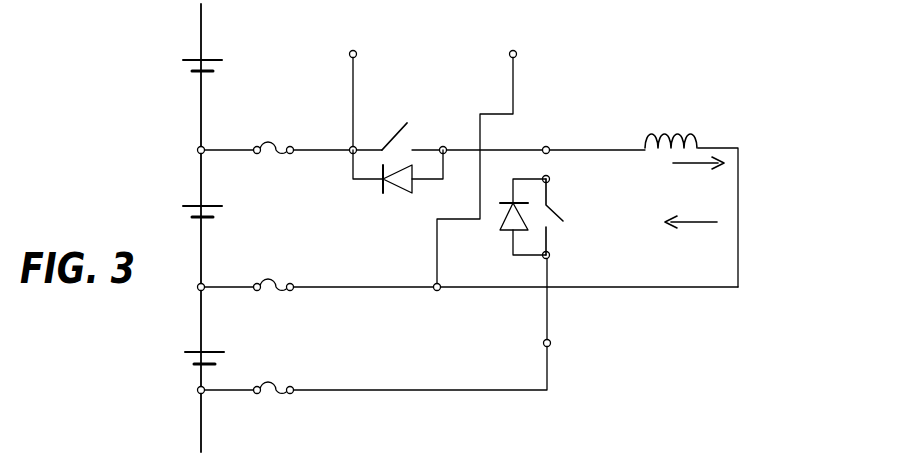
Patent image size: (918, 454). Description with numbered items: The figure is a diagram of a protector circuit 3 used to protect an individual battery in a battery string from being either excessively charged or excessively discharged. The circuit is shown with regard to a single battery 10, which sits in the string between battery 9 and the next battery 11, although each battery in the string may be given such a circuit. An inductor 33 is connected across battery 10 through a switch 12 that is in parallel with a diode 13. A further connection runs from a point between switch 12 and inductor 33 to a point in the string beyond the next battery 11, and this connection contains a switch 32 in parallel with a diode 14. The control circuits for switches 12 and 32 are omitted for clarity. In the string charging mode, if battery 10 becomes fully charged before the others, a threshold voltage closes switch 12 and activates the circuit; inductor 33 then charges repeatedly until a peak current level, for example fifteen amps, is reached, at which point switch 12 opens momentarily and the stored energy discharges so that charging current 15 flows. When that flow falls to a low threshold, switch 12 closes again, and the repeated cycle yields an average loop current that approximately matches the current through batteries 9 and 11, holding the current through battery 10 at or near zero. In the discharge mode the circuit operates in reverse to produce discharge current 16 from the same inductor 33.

The protector circuit 3 is at (683, 372).
The battery 9 is at (184, 58).
The battery 10 is at (186, 205).
The next battery 11 is at (188, 352).
The switch 12 is at (383, 133).
The diode 13 is at (399, 190).
The diode 14 is at (503, 218).
The charging current 15 is at (716, 190).
The discharge current 16 is at (716, 248).
The switch 32 is at (558, 212).
The inductor 33 is at (652, 130).